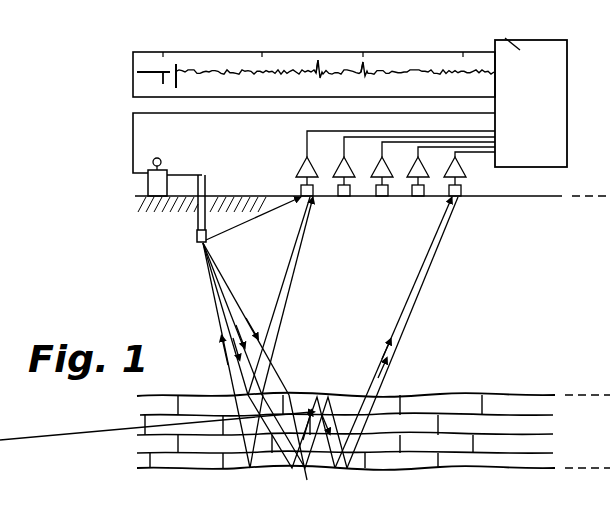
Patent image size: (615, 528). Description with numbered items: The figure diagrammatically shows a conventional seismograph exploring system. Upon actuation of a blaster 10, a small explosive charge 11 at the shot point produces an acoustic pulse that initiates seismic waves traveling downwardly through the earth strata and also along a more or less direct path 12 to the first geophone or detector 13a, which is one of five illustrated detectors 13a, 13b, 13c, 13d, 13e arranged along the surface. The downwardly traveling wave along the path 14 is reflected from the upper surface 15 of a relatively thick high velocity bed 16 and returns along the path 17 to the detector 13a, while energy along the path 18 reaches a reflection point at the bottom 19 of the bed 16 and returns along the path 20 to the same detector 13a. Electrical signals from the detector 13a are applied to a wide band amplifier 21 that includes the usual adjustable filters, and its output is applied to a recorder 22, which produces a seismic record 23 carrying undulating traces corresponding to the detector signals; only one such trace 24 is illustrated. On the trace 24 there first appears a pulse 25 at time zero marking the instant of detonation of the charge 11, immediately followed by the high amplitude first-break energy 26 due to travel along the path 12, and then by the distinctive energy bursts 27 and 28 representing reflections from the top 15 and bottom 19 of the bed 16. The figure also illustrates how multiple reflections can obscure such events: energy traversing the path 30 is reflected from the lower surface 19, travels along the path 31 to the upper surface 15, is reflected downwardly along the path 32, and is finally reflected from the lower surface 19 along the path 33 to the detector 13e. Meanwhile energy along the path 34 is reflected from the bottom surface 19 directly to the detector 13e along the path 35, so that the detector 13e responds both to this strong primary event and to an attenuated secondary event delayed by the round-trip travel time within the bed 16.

The blaster 10 is at (148, 189).
The explosive charge 11 is at (197, 241).
The direct path 12 is at (228, 228).
The detector 13a is at (300, 186).
The detector 13b is at (345, 197).
The detector 13c is at (383, 197).
The detector 13d is at (419, 197).
The detector 13e is at (462, 191).
The downward path 14 is at (226, 323).
The upper surface 15 is at (172, 392).
The high velocity bed 16 is at (128, 470).
The reflected path 17 is at (281, 287).
The downward path 18 is at (225, 353).
The bottom surface 19 is at (200, 470).
The return path 20 is at (283, 312).
The amplifier 21 is at (300, 160).
The recorder 22 is at (568, 70).
The seismic record 23 is at (311, 37).
The trace 24 is at (150, 70).
The pulse 25 is at (160, 78).
The first-break energy 26 is at (178, 63).
The energy burst 27 is at (322, 62).
The energy burst 28 is at (369, 66).
The path 30 is at (229, 307).
The path 31 is at (304, 494).
The path 32 is at (330, 425).
The path 33 is at (412, 309).
The path 34 is at (285, 380).
The path 35 is at (400, 321).